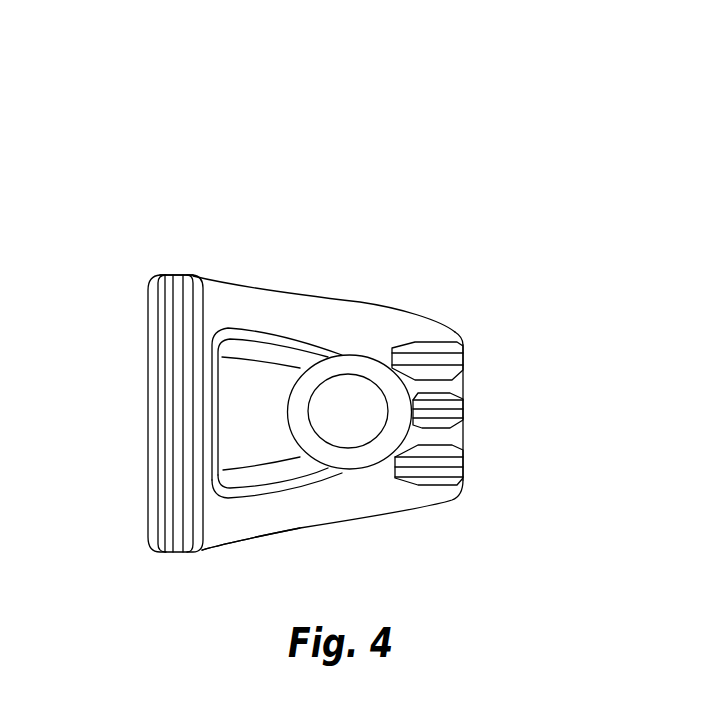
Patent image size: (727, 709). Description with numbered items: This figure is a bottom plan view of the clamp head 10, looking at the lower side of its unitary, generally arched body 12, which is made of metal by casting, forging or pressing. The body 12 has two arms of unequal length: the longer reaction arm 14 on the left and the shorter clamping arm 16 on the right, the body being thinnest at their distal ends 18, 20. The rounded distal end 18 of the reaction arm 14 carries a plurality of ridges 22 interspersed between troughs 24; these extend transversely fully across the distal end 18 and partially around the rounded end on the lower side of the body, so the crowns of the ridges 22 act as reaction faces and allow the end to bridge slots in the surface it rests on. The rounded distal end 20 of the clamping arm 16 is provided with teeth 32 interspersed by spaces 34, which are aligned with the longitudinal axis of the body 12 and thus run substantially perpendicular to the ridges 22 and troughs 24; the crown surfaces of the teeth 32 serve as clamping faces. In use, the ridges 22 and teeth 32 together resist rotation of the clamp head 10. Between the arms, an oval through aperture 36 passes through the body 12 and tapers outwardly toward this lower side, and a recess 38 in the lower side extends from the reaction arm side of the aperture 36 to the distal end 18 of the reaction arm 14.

The clamp head 10 is at (467, 108).
The body 12 is at (398, 513).
The reaction arm 14 is at (218, 535).
The clamping arm 16 is at (445, 330).
The distal end of the reaction arm 18 is at (150, 362).
The distal end of the clamping arm 20 is at (466, 335).
The ridges 22 is at (172, 532).
The troughs 24 is at (163, 275).
The teeth 32 is at (457, 390).
The spaces 34 is at (457, 362).
The through aperture 36 is at (346, 393).
The recess 38 is at (257, 373).